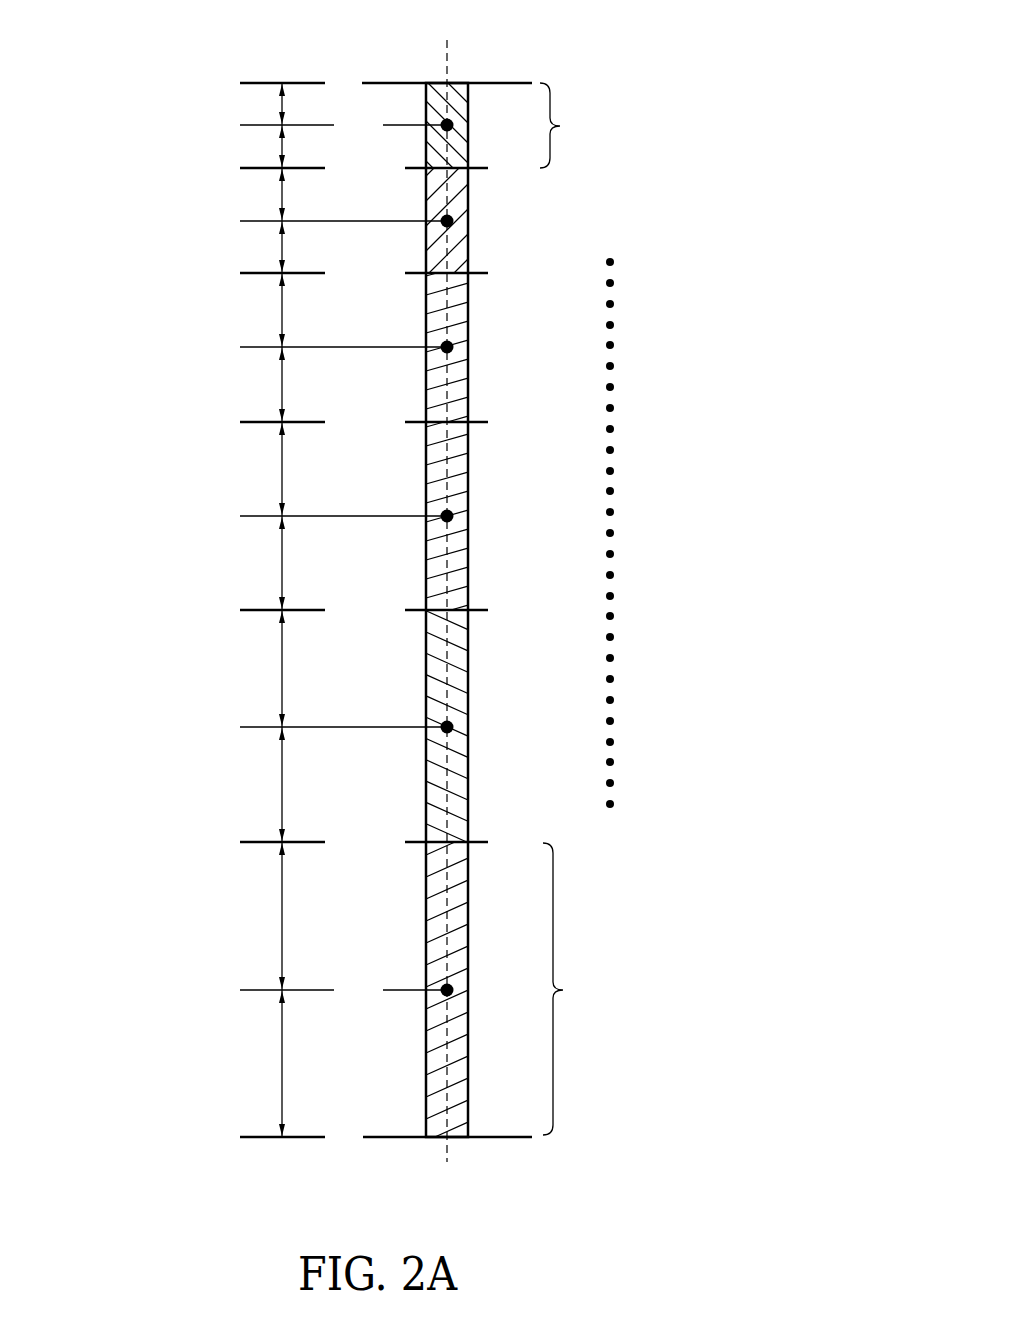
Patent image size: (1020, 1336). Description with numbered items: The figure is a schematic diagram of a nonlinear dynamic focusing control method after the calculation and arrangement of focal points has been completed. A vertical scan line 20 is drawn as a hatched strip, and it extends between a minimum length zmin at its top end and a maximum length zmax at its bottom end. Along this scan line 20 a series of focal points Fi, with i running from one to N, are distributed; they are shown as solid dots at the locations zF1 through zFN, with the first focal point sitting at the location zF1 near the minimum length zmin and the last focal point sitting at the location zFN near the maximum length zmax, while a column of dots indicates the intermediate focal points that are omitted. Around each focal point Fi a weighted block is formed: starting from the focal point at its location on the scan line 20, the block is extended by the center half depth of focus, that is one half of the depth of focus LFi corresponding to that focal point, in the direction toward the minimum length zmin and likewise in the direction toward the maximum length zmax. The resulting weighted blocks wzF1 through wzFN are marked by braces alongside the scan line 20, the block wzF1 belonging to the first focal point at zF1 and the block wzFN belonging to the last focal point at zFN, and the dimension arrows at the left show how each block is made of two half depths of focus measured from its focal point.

The scan line 20 is at (446, 62).
The focal point Fi is at (450, 116).
The minimum length zmin is at (515, 83).
The maximum length zmax is at (513, 1137).
The location of the first focal point zF1 is at (343, 126).
The location of the N-th focal point zFN is at (347, 991).
The weighted block wzF1 is at (597, 125).
The weighted block wzFN is at (601, 989).
The depth of focus LFi is at (346, 347).